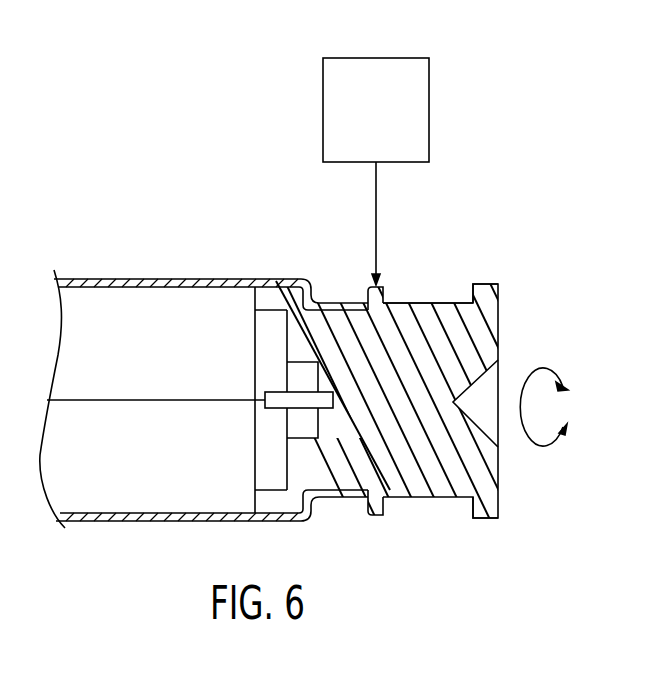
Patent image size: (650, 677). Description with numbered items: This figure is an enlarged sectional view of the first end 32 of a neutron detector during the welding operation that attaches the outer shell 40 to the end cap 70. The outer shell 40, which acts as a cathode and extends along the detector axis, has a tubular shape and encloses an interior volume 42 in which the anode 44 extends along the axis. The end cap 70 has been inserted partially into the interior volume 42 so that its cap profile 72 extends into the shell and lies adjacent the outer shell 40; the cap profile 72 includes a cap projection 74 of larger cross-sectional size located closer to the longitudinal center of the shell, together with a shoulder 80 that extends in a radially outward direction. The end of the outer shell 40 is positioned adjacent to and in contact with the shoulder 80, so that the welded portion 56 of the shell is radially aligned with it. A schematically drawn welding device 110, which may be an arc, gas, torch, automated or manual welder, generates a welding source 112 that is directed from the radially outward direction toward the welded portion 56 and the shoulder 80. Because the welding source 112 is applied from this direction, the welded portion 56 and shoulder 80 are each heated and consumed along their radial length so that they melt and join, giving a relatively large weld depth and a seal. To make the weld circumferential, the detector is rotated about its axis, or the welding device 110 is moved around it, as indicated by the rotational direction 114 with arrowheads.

The welding device 110 is at (375, 58).
The welding source 112 is at (378, 220).
The outer shell 40 is at (172, 278).
The interior volume 42 is at (111, 300).
The anode 44 is at (150, 399).
The cap projection 74 is at (298, 287).
The cap profile 72 is at (296, 327).
The welded portion 56 is at (368, 287).
The shoulder 80 is at (392, 302).
The first end 32 is at (483, 283).
The end cap 70 is at (499, 317).
The rotational direction 114 is at (542, 447).